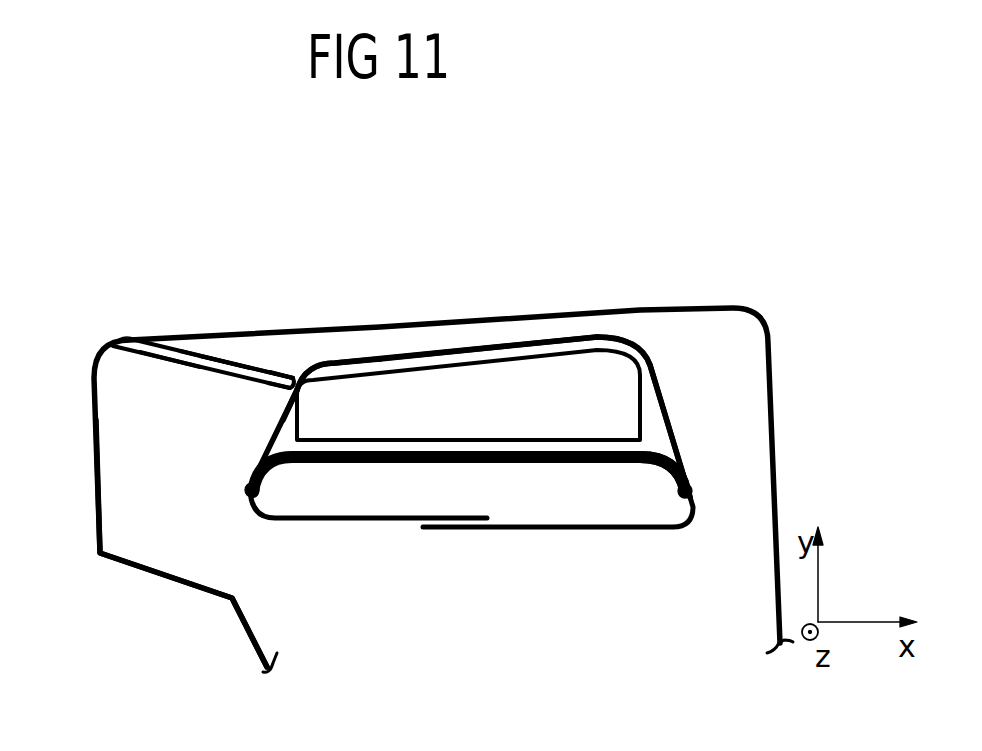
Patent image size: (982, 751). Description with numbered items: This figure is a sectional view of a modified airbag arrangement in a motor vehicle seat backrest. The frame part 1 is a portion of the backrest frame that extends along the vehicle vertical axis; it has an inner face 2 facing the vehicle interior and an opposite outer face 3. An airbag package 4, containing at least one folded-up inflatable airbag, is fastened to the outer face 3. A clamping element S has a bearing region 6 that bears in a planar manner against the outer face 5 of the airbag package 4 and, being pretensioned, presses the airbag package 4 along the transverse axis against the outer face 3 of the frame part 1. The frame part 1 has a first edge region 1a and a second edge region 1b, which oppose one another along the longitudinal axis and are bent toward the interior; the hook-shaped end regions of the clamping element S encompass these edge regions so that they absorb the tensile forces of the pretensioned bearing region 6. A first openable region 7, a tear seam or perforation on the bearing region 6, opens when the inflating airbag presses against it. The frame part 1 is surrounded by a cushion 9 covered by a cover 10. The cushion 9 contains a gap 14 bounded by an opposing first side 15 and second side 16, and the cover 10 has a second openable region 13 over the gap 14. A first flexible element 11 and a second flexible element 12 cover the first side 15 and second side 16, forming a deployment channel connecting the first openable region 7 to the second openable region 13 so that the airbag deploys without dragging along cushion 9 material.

The frame part 1 is at (503, 463).
The first edge region 1a is at (670, 477).
The second edge region 1b is at (263, 485).
The inner face 2 is at (613, 465).
The outer face 3 is at (590, 447).
The airbag package 4 is at (573, 377).
The outer face 5 is at (493, 353).
The bearing region 6 is at (457, 353).
The first openable region 7 is at (290, 388).
The cushion 9 is at (167, 535).
The cover 10 is at (773, 470).
The first flexible element 11 is at (297, 377).
The second flexible element 12 is at (240, 381).
The second openable region 13 is at (120, 338).
The gap 14 is at (250, 362).
The first side 15 is at (183, 365).
The second side 16 is at (228, 358).
The clamping element S is at (687, 435).